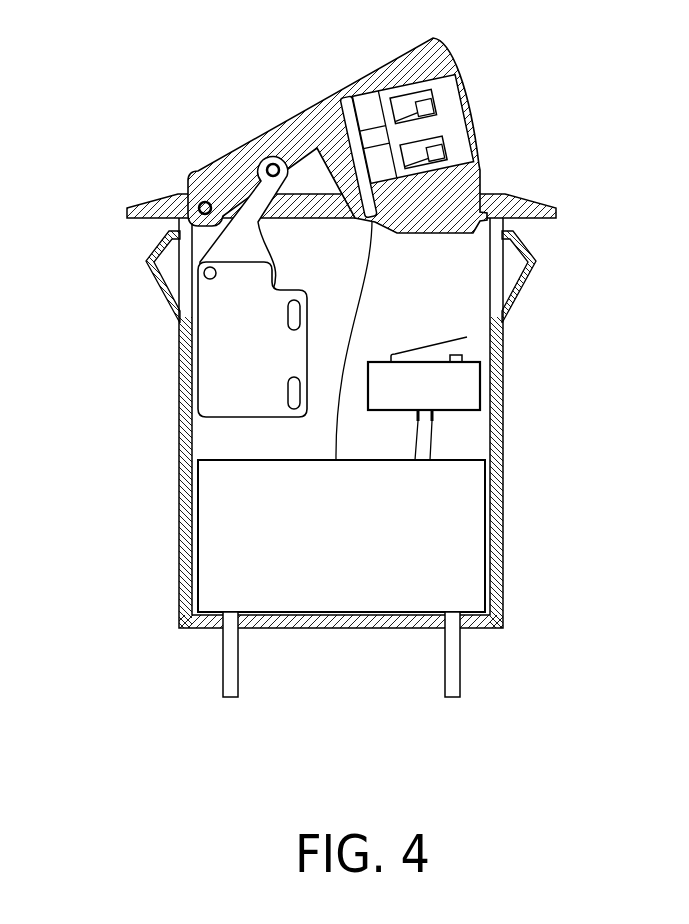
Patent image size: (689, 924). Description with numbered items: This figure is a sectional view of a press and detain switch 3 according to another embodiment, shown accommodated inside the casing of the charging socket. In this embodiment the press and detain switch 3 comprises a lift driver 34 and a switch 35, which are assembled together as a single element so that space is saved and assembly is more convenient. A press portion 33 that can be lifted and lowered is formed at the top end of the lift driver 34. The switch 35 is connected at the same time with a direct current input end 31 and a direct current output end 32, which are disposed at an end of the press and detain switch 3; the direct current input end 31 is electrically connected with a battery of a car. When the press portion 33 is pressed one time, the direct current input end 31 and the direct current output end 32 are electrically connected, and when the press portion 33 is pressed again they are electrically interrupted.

The press and detain switch 3 is at (83, 382).
The direct current input end 31 is at (433, 415).
The direct current output end 32 is at (432, 425).
The press portion 33 is at (258, 187).
The lift driver 34 is at (230, 372).
The switch 35 is at (393, 398).